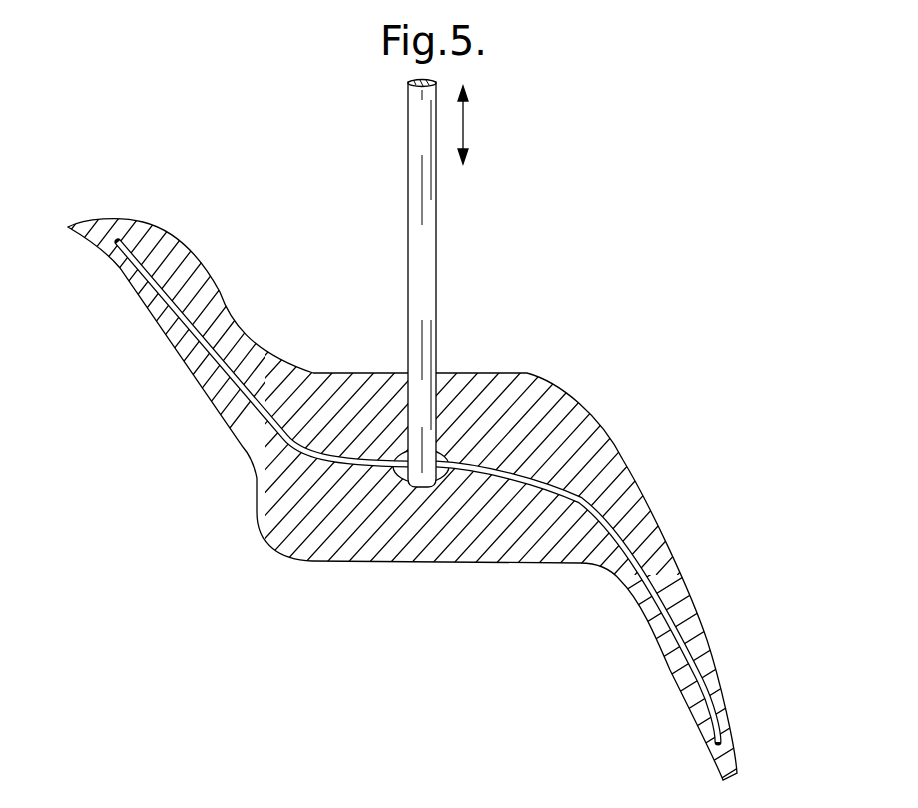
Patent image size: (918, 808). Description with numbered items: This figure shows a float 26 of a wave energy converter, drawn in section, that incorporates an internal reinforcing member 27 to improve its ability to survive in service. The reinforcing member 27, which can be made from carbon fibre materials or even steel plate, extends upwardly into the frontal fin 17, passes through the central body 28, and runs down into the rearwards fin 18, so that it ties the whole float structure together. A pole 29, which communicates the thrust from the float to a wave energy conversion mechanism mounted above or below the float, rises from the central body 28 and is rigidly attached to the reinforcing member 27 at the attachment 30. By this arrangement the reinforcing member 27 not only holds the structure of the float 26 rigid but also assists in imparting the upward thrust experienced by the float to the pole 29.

The frontal fin 17 is at (174, 352).
The rearwards fin 18 is at (718, 690).
The float 26 is at (365, 562).
The internal reinforcing member 27 is at (565, 498).
The central body 28 is at (477, 392).
The pole 29 is at (408, 192).
The attachment of pole to reinforcing member 30 is at (447, 457).